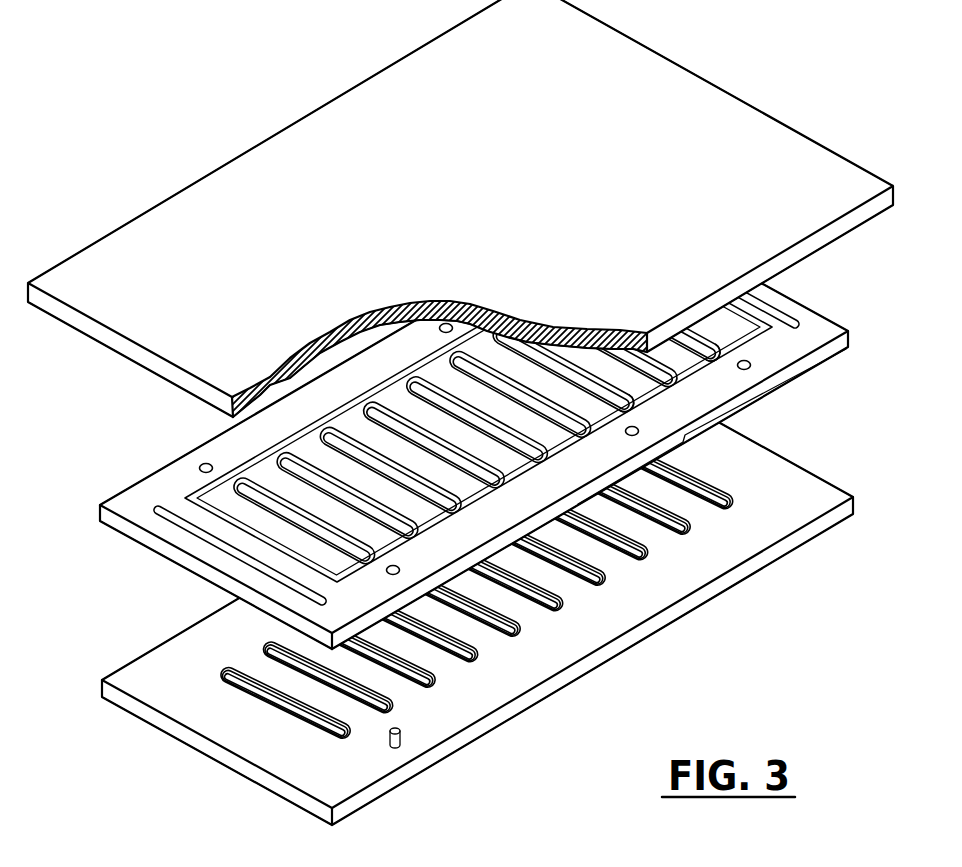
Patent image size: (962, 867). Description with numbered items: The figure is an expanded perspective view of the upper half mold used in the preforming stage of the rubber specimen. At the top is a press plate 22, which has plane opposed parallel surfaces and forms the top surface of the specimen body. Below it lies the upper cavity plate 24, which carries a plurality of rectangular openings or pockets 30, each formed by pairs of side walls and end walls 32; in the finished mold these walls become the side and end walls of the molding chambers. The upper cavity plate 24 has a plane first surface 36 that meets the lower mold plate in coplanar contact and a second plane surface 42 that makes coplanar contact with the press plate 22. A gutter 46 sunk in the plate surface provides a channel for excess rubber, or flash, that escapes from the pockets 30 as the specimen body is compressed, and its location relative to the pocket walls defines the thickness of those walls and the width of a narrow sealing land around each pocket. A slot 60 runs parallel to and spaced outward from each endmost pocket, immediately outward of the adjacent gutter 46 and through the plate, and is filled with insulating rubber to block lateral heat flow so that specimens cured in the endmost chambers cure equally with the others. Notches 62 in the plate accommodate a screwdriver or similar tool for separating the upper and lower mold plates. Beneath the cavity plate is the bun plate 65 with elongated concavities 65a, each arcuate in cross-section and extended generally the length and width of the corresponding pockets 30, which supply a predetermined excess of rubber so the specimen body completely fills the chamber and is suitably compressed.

The press plate 22 is at (215, 200).
The upper cavity plate 24 is at (227, 567).
The rectangular openings or pockets 30 is at (185, 496).
The end walls 32 is at (270, 477).
The plane first surface 36 is at (131, 543).
The second plane surface 42 is at (458, 426).
The gutter 46 is at (612, 394).
The slot 60 is at (206, 538).
The notches 62 is at (713, 425).
The bun plate 65 is at (472, 600).
The elongated concavities 65a is at (353, 688).